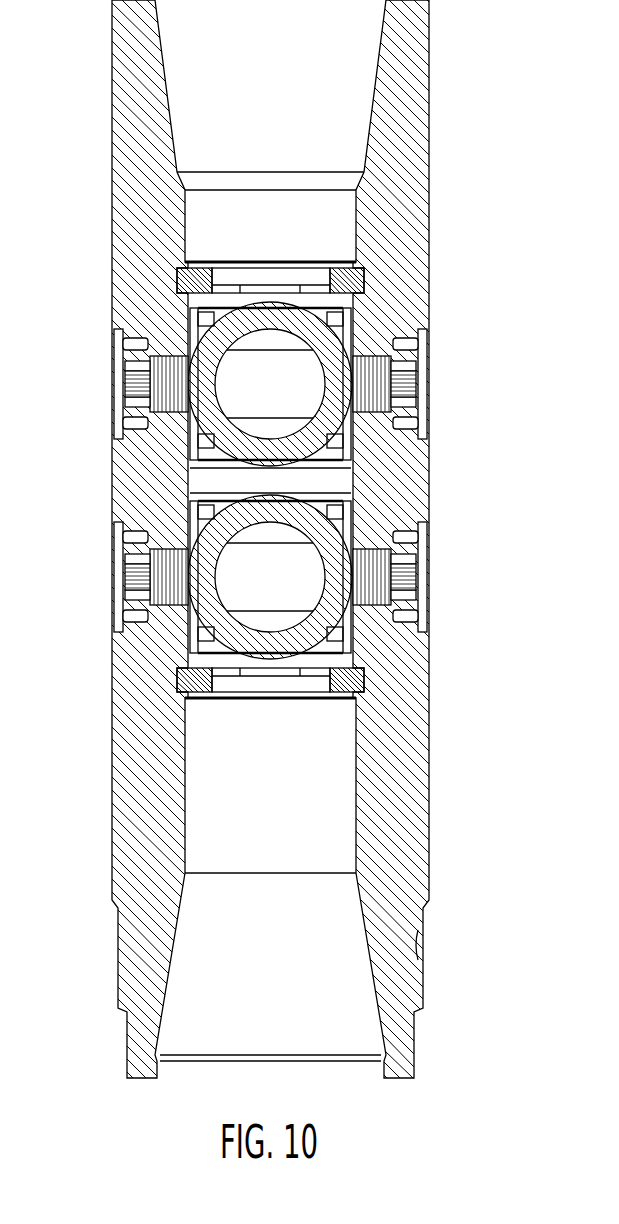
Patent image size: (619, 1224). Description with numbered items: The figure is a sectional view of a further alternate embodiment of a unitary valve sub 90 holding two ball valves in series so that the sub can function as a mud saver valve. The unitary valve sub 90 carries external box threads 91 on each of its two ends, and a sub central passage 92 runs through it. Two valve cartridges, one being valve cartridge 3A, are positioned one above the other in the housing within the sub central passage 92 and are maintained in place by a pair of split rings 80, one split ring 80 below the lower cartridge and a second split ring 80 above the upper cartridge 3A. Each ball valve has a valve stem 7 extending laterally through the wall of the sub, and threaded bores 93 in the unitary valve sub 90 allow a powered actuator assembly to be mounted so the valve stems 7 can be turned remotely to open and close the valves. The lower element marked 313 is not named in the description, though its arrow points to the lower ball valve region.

The valve housing 90 is at (437, 513).
The tapered bore 91 is at (287, 70).
The cylindrical bore 92 is at (287, 234).
The retaining nut 80 is at (364, 283).
The upper ball valve assembly 3A is at (158, 465).
The lower ball valve assembly 313 is at (170, 653).
The valve stem 7 is at (405, 388).
The fastening pin 93 is at (407, 343).